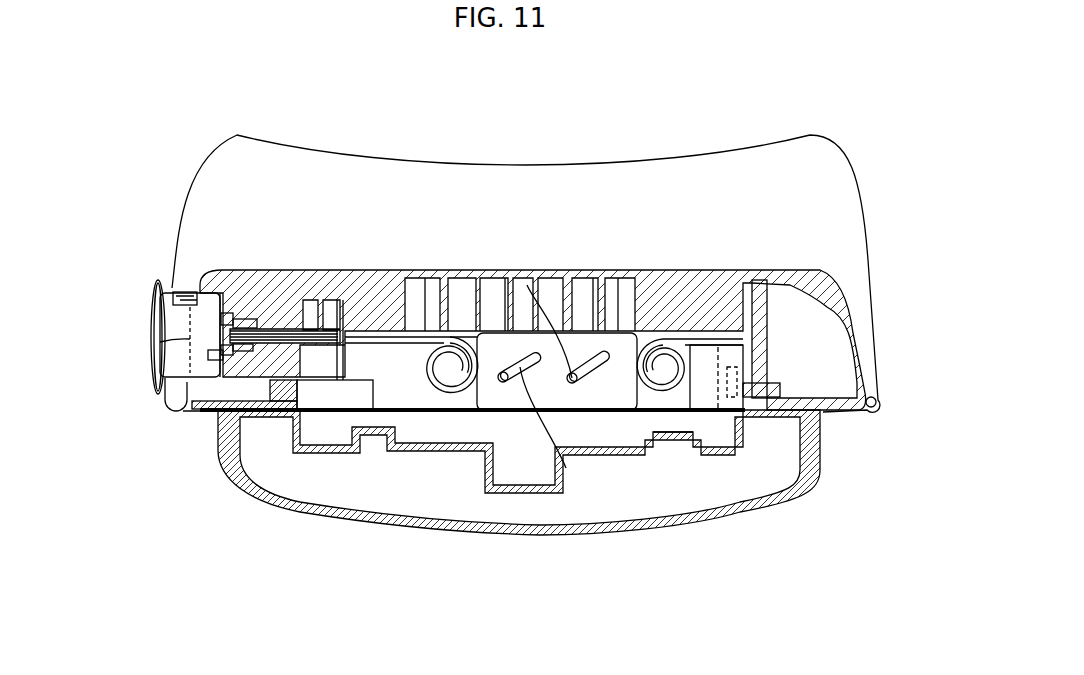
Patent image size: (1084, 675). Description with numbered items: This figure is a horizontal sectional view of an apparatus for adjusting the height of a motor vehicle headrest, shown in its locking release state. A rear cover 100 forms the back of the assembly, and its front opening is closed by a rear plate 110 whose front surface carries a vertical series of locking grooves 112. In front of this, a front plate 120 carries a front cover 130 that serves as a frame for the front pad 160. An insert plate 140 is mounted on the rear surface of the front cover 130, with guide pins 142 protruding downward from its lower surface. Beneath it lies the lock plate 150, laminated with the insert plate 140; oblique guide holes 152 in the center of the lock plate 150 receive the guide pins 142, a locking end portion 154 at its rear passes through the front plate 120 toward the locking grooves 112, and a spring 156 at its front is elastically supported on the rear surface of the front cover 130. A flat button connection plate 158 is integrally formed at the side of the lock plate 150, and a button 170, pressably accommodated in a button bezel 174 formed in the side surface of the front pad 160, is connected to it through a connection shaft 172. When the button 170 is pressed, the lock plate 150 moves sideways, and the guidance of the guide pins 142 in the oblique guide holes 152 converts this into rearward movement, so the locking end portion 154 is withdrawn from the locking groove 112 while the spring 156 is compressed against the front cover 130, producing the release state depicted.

The rear cover 100 is at (347, 527).
The rear plate 110 is at (316, 462).
The locking groove 112 is at (683, 423).
The front plate 120 is at (793, 372).
The front cover 130 is at (781, 256).
The insert plate 140 is at (582, 319).
The guide pin 142 is at (503, 372).
The lock plate 150 is at (433, 416).
The guide hole 152 is at (572, 383).
The locking end portion 154 is at (618, 412).
The spring 156 is at (651, 333).
The button connection plate 158 is at (357, 345).
The front pad 160 is at (727, 149).
The button 170 is at (157, 343).
The connection shaft 172 is at (229, 312).
The button bezel 174 is at (162, 292).